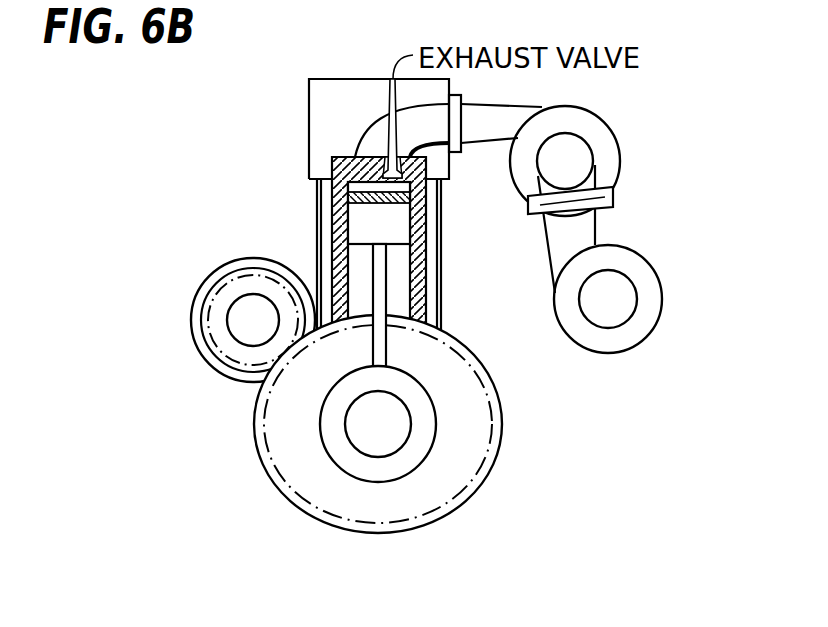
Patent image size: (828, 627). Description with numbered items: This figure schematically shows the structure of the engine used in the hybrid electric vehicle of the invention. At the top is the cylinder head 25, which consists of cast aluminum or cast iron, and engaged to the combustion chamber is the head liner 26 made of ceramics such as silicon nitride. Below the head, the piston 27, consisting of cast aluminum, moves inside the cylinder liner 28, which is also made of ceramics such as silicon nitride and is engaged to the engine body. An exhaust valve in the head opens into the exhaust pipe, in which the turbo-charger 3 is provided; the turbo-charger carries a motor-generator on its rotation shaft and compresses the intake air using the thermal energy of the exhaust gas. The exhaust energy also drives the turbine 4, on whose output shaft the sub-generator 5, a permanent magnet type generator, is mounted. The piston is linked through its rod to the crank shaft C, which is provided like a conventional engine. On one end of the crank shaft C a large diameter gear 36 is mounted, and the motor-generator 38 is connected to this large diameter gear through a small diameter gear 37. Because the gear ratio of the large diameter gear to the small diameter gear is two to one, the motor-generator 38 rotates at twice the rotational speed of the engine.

The turbo-charger 3 is at (582, 132).
The turbine 4 is at (630, 332).
The sub-generator 5 is at (595, 245).
The cylinder head 25 is at (328, 111).
The head liner 26 is at (333, 162).
The piston 27 is at (390, 220).
The cylinder liner 28 is at (332, 233).
The large diameter gear 36 is at (503, 407).
The small diameter gear 37 is at (213, 347).
The motor-generator 38 is at (192, 307).
The crank shaft C is at (388, 440).